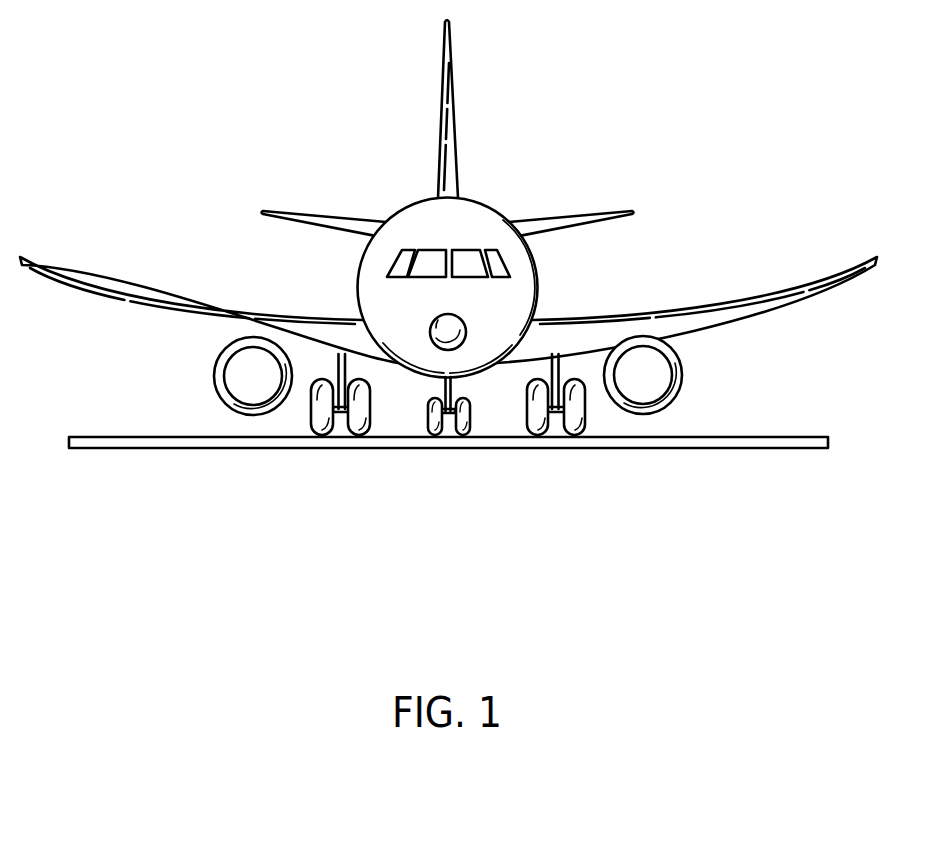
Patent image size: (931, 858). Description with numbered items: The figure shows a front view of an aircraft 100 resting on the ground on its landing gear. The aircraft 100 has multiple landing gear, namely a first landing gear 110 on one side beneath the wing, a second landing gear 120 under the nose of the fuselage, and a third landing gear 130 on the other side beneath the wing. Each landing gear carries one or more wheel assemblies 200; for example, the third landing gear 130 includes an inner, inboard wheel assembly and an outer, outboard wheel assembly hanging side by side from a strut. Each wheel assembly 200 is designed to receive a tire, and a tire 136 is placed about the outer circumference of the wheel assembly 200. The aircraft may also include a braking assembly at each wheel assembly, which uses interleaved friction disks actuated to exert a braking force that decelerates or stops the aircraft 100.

The aircraft 100 is at (448, 274).
The first landing gear 110 is at (583, 418).
The second landing gear 120 is at (468, 418).
The third landing gear 130 is at (341, 446).
The tire 136 is at (345, 433).
The wheel assembly 200 is at (358, 435).